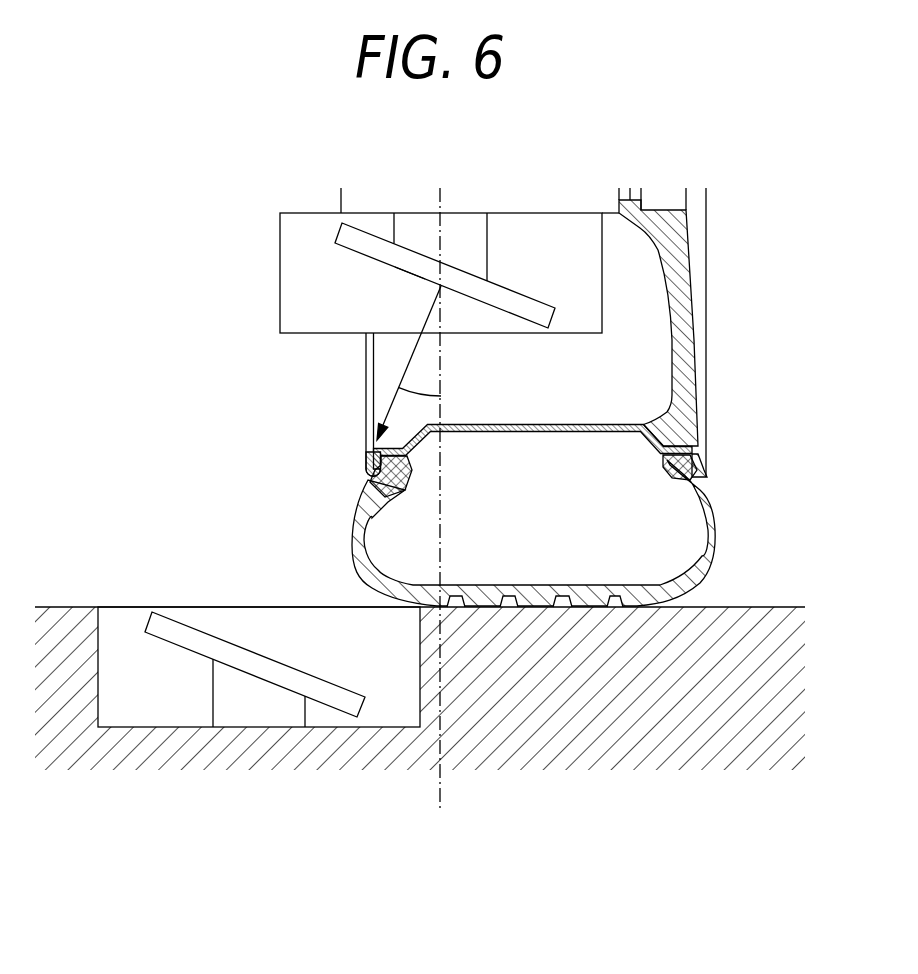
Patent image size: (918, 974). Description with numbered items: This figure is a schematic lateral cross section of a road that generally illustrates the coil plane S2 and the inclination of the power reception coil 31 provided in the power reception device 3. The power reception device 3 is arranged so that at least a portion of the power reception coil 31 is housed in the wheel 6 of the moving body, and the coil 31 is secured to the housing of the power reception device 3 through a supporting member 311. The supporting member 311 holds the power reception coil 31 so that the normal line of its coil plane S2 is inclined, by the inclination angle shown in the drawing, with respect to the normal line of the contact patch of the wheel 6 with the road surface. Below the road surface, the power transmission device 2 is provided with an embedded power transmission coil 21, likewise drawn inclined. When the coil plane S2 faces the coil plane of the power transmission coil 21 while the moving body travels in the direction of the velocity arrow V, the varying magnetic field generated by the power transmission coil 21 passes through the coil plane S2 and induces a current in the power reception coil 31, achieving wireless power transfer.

The wheel 6 is at (728, 296).
The power reception device 3 is at (416, 260).
The power reception coil 31 is at (363, 248).
The supporting member 311 is at (473, 239).
The coil plane S2 is at (410, 279).
The velocity vector V is at (407, 363).
The power transmission device 2 is at (420, 658).
The power transmission coil 21 is at (318, 688).